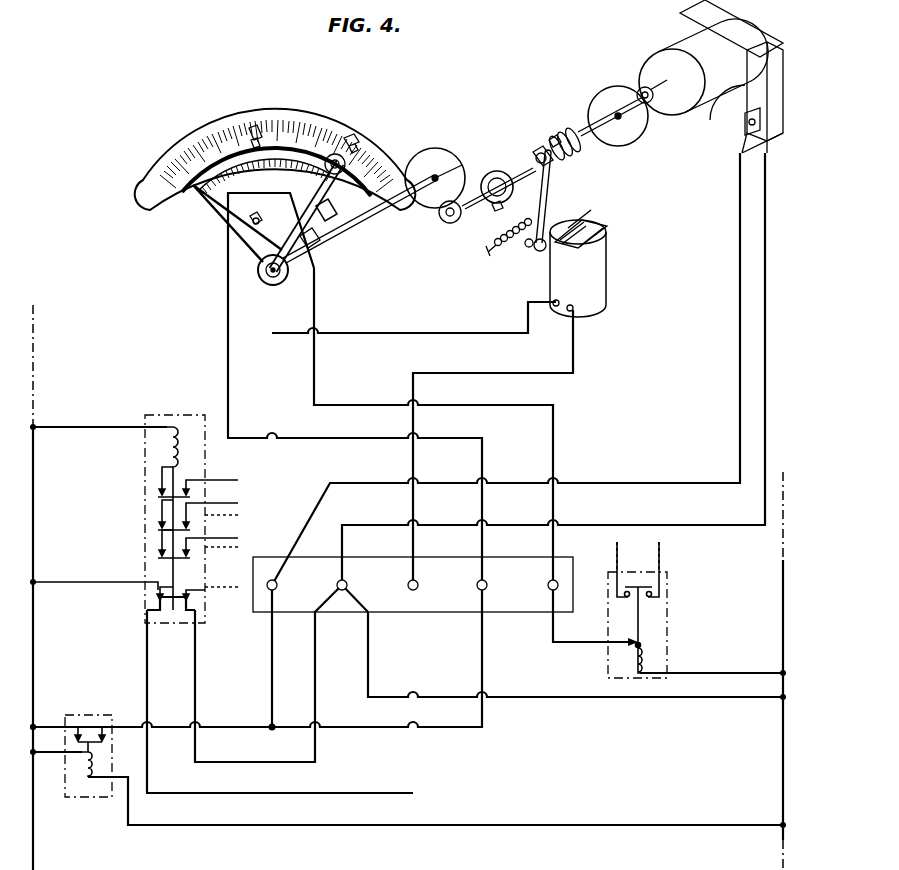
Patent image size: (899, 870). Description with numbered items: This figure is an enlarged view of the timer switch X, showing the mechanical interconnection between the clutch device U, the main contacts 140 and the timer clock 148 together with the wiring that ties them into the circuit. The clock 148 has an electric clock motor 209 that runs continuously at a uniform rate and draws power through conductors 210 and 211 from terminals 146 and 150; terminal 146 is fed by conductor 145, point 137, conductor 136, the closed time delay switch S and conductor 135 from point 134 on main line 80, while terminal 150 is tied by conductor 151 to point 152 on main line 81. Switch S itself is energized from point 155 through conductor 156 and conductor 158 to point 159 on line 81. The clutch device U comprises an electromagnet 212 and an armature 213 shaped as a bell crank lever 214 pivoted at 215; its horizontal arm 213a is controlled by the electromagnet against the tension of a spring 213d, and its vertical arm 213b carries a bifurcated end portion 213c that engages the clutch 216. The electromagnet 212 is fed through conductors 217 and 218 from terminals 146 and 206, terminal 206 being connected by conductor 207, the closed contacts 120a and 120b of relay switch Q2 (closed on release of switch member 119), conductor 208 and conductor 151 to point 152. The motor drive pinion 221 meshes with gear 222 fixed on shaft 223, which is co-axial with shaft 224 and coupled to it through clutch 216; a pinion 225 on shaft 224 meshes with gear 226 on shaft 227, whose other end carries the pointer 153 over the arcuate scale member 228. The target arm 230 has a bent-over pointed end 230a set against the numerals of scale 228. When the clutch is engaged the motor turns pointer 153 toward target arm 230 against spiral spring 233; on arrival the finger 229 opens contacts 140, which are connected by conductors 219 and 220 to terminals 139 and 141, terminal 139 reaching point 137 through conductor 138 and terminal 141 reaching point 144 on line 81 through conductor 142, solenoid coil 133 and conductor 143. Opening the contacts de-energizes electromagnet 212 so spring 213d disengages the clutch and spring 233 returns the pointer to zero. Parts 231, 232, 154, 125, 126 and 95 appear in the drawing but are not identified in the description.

The scale member 228 is at (187, 136).
The clamp 232 is at (252, 126).
The knob 231 is at (332, 154).
The pointed end portion 230a is at (349, 138).
The pointer 154 is at (308, 197).
The target arm 230 is at (331, 212).
The main contacts 140 is at (316, 240).
The pointer 153 is at (212, 222).
The finger 229 is at (268, 203).
The shaft 227 is at (405, 198).
The conductor 219 is at (228, 345).
The conductor 220 is at (314, 357).
The gear 226 is at (437, 150).
The pinion 225 is at (447, 218).
The spiral spring 233 is at (494, 178).
The shaft 224 is at (535, 153).
The clutch 216 is at (560, 130).
The bifurcated end portion 213c is at (549, 140).
The shaft 223 is at (591, 138).
The gear 222 is at (605, 98).
The drive pinion 221 is at (661, 112).
The timer clock 148 is at (652, 46).
The electric clock motor 209 is at (711, 128).
The electromagnet 212 is at (592, 300).
The clutch device U is at (618, 241).
The armature 213 is at (608, 226).
The horizontal arm 213a is at (585, 212).
The vertical arm 213b is at (546, 205).
The spring 213d is at (492, 245).
The pivot 215 is at (525, 247).
The bell crank lever 214 is at (535, 252).
The conductor 217 is at (445, 332).
The conductor 218 is at (565, 372).
The conductor 210 is at (601, 482).
The conductor 211 is at (620, 525).
The wire 126 is at (100, 427).
The junction 125 is at (33, 427).
The main line 80 is at (33, 636).
The main line 81 is at (783, 583).
The point 137 is at (266, 727).
The conductor 145 is at (272, 673).
The conductor 138 is at (487, 698).
The conductor 151 is at (630, 699).
The point 152 is at (783, 700).
The conductor 208 is at (196, 664).
The conductor 207 is at (147, 661).
The conductor 136 is at (166, 727).
The conductor 158 is at (486, 825).
The point 159 is at (783, 825).
The conductor 142 is at (585, 643).
The conductor 143 is at (713, 672).
The point 144 is at (783, 673).
The point 134 is at (33, 727).
The conductor 135 is at (66, 727).
The point 155 is at (40, 760).
The terminal 146 is at (276, 582).
The terminal 150 is at (346, 583).
The terminal 206 is at (417, 583).
The terminal 139 is at (486, 583).
The terminal 141 is at (550, 580).
The relay switch Q2 is at (140, 513).
The switch member 119 is at (175, 426).
The contact 120a is at (158, 597).
The contact 120b is at (190, 597).
The time delay switch S is at (100, 800).
The conductor 156 is at (80, 785).
The timer switch X is at (649, 625).
The contact 95 is at (642, 630).
The solenoid coil 133 is at (633, 658).